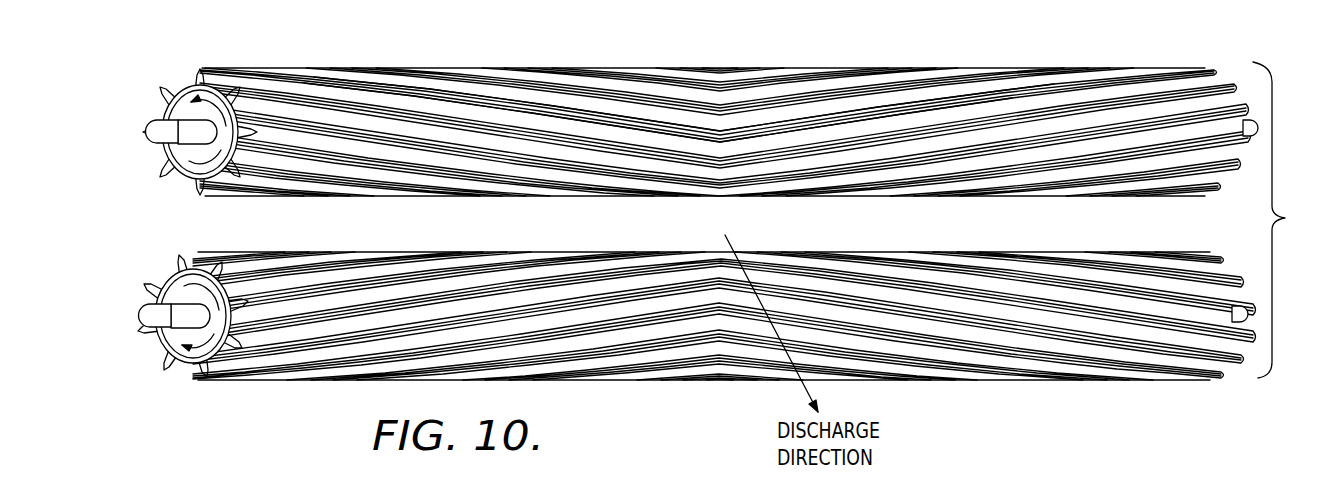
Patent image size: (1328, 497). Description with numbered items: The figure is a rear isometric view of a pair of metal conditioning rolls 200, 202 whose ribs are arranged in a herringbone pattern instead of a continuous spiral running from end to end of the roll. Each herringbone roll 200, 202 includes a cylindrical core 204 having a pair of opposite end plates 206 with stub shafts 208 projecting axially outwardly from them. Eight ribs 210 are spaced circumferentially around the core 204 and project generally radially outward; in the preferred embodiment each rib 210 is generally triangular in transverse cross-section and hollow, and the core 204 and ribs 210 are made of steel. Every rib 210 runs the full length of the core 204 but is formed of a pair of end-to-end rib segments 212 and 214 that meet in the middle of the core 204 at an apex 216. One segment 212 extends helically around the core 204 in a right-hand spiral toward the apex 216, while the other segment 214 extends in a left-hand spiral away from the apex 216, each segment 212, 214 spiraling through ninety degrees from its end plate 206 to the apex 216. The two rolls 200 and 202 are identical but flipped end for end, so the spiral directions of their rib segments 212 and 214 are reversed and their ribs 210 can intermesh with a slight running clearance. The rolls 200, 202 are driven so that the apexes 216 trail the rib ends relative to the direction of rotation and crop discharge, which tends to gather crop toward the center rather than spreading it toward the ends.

The metal conditioning roll 200 is at (714, 204).
The metal conditioning roll 202 is at (158, 385).
The cylindrical core 204 is at (303, 163).
The end plate 206 is at (180, 112).
The stub shaft 208 is at (147, 135).
The rib 210 is at (413, 90).
The rib segment 212 is at (608, 102).
The rib segment 214 is at (940, 85).
The apex 216 is at (745, 120).